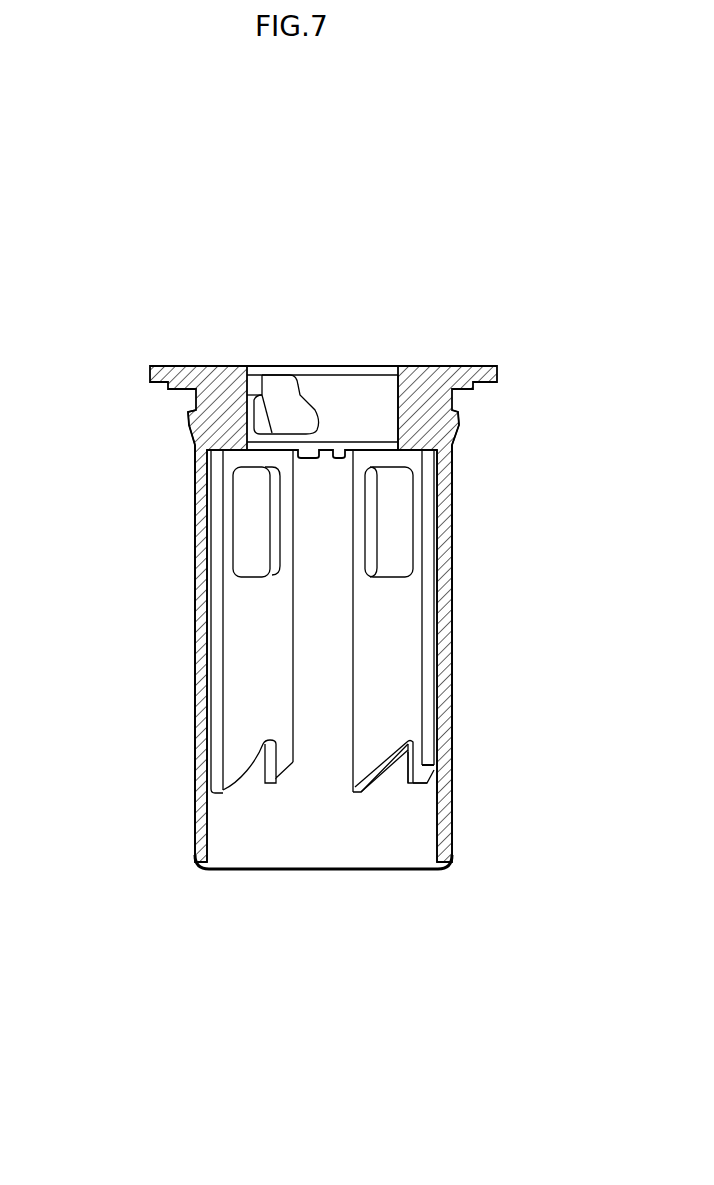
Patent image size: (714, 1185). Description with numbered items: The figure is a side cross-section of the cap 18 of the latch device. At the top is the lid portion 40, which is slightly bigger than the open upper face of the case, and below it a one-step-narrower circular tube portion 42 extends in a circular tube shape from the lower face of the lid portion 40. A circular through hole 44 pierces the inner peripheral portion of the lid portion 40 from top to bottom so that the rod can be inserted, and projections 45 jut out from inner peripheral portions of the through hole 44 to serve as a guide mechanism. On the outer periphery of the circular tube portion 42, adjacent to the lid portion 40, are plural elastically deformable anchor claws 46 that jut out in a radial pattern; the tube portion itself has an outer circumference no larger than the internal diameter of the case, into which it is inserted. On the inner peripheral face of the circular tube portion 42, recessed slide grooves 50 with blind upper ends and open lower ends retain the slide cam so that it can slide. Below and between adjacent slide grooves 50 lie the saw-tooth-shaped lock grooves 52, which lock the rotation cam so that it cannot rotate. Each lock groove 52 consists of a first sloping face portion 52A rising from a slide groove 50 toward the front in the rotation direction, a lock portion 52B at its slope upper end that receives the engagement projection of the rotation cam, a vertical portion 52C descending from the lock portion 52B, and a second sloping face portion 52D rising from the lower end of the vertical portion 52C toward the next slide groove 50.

The cap 18 is at (126, 346).
The lid portion 40 is at (502, 373).
The circular tube portion 42 is at (457, 593).
The through hole 44 is at (388, 400).
The projections 45 is at (294, 403).
The anchor claws 46 is at (188, 418).
The slide grooves 50 is at (305, 668).
The lock grooves 52 is at (572, 950).
The first sloping face portion 52A is at (384, 790).
The lock portion 52B is at (404, 788).
The vertical portion 52C is at (417, 787).
The second sloping face portion 52D is at (440, 792).